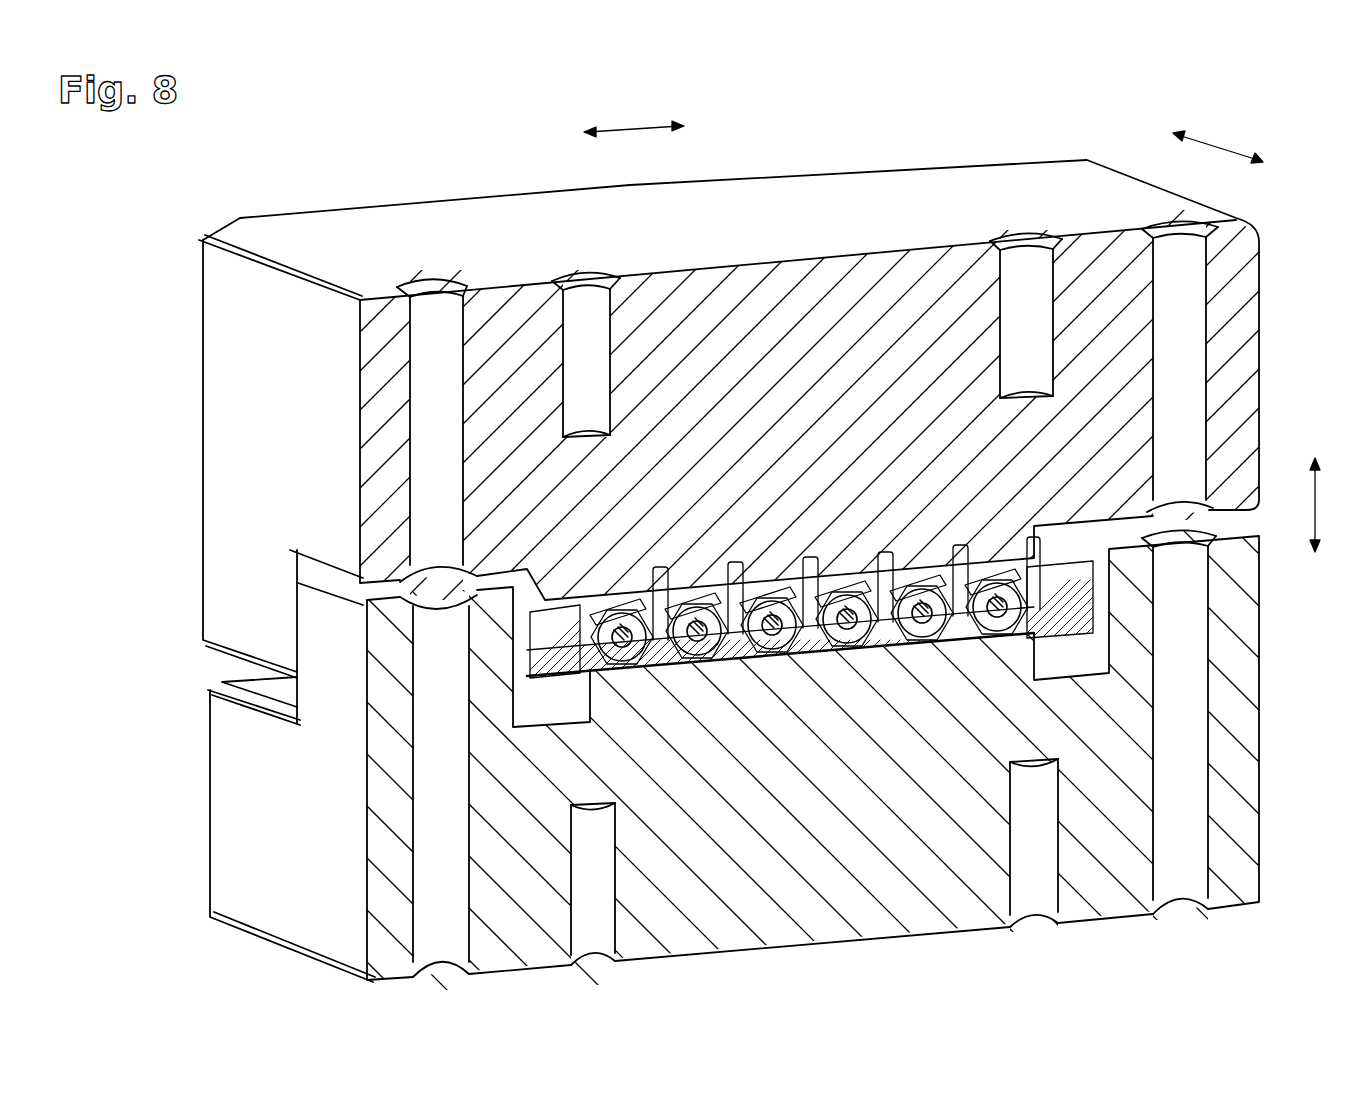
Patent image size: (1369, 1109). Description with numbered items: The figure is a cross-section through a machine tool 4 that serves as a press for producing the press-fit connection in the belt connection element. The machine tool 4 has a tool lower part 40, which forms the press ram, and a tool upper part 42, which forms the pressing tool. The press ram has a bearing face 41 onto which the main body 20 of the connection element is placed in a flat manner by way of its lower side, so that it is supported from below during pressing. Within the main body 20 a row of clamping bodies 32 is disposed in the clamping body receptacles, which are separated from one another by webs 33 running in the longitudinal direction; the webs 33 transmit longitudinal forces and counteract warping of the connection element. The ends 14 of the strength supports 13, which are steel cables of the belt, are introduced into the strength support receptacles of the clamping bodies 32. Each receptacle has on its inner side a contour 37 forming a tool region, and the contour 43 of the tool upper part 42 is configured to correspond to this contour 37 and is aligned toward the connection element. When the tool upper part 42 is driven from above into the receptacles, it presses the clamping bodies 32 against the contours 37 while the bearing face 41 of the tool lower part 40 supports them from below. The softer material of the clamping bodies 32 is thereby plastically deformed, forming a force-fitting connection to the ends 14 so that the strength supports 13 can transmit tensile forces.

The machine tool 4 is at (343, 170).
The strength supports 13 is at (853, 643).
The ends of the strength supports 14 is at (809, 622).
The main body 20 is at (1114, 612).
The clamping bodies 32 is at (912, 645).
The webs 33 is at (737, 657).
The contour 37 is at (977, 640).
The tool lower part 40 is at (268, 818).
The bearing face 41 is at (1100, 630).
The tool upper part 42 is at (275, 460).
The contour of the pressing tool 43 is at (993, 557).